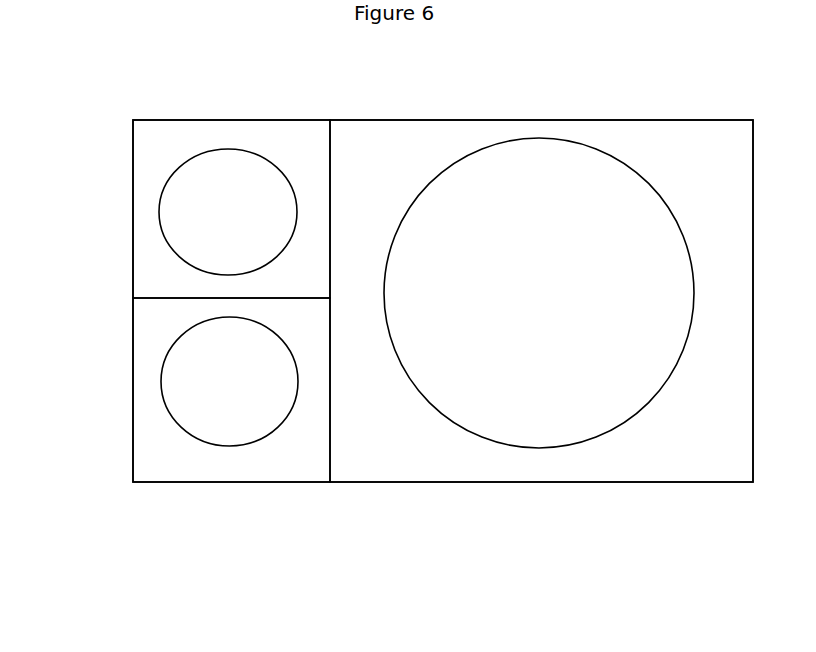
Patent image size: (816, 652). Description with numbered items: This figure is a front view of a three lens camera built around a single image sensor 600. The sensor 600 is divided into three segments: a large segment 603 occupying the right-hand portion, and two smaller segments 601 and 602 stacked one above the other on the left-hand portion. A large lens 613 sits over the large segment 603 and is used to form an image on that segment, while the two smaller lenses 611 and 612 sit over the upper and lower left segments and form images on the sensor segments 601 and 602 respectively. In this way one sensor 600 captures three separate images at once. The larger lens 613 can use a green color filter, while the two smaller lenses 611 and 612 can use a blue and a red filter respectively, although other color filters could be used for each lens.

The sensor 600 is at (419, 482).
The sensor segment 601 is at (152, 177).
The sensor segment 602 is at (150, 444).
The sensor segment 603 is at (652, 443).
The smaller lens 611 is at (232, 192).
The smaller lens 612 is at (190, 387).
The large lens 613 is at (594, 237).